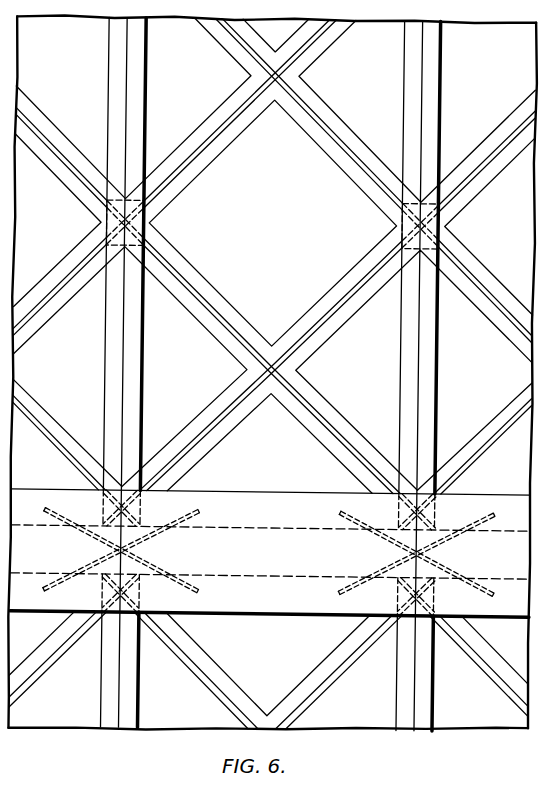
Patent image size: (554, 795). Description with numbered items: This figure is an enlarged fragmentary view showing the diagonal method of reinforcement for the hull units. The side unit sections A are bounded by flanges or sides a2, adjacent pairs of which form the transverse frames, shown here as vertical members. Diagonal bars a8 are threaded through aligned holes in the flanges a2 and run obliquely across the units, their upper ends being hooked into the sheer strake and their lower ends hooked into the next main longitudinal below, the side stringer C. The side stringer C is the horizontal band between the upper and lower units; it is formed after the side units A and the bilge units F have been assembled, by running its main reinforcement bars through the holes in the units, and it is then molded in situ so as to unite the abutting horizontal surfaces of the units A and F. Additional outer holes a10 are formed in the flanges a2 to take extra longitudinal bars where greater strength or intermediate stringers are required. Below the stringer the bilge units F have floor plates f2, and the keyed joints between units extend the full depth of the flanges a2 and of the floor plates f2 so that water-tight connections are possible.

The unit section A is at (273, 255).
The flanges or sides a2 is at (110, 341).
The diagonal bars a8 is at (297, 332).
The additional outer holes a10 is at (145, 246).
The side stringer C is at (234, 502).
The bilge units F is at (268, 671).
The floor plates f2 is at (100, 695).